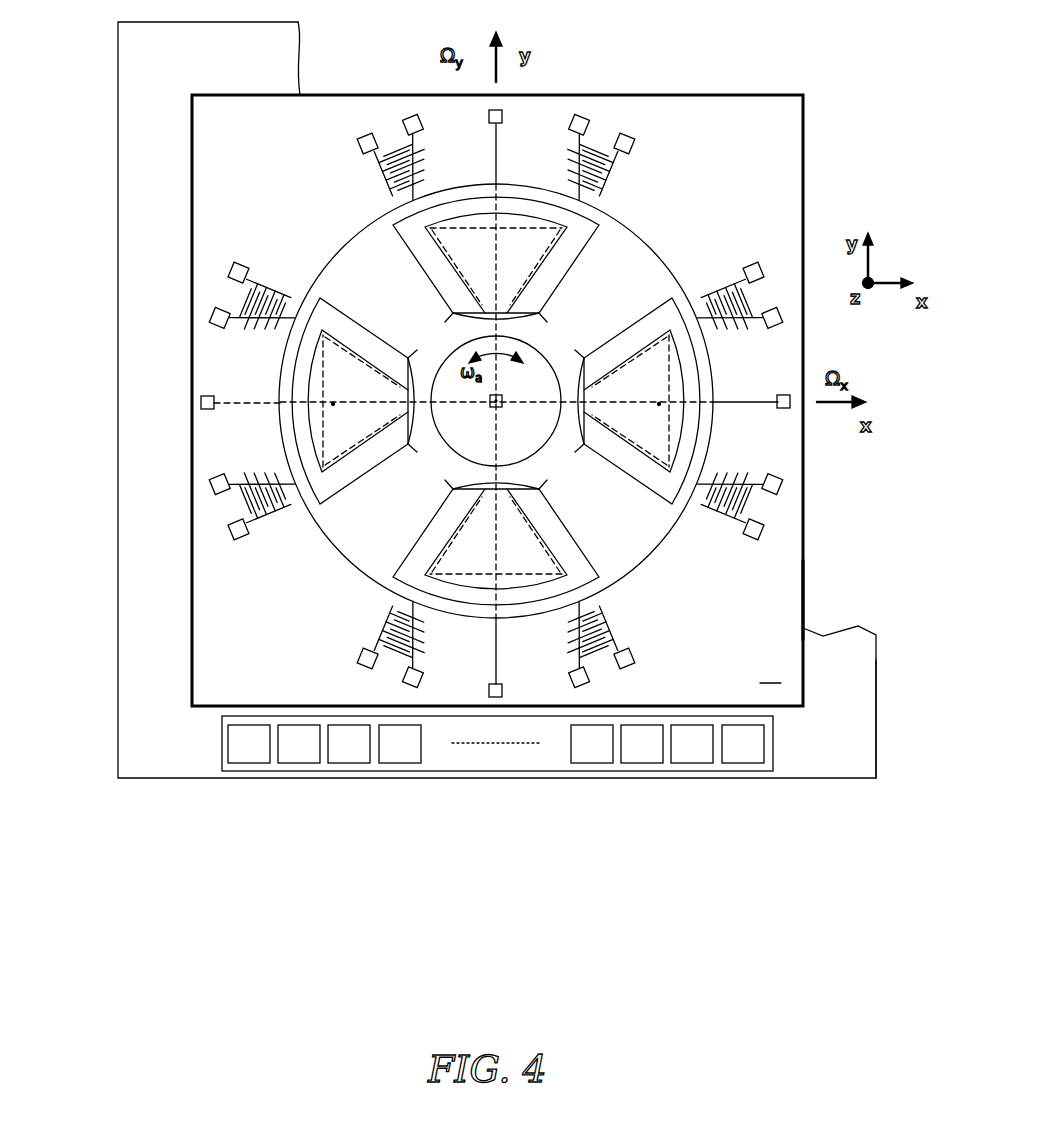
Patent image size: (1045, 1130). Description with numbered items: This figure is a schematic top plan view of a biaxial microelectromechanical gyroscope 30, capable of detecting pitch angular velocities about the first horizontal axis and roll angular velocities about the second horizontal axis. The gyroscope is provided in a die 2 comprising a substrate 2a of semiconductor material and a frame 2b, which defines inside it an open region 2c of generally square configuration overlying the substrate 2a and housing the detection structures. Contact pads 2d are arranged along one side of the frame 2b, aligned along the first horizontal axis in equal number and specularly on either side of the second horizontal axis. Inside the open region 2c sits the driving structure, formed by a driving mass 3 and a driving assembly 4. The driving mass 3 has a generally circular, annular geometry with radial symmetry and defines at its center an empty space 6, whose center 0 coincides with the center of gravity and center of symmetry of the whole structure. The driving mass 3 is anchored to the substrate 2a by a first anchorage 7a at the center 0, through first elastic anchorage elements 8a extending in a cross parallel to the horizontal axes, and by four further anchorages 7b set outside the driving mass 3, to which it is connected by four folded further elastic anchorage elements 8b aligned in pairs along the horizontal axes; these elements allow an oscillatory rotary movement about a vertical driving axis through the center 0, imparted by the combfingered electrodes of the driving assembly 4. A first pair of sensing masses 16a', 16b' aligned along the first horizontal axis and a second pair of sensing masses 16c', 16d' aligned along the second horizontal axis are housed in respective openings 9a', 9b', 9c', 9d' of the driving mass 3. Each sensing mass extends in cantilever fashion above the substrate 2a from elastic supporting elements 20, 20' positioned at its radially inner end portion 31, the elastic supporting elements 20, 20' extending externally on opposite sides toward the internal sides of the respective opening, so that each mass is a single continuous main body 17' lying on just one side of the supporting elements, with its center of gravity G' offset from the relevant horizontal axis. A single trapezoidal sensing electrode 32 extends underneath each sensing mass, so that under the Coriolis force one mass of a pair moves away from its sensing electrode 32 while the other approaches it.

The die 2 is at (118, 507).
The substrate 2a is at (771, 673).
The frame 2b is at (862, 672).
The open region 2c is at (798, 598).
The contact pads 2d is at (249, 765).
The driving mass 3 is at (362, 236).
The driving assembly 4 is at (262, 247).
The empty space 6 is at (534, 432).
The first anchorage 7a is at (489, 406).
The further anchorages 7b is at (503, 117).
The first elastic anchorage elements 8a is at (498, 364).
The further elastic anchorage elements 8b is at (497, 158).
The opening 9a' is at (350, 393).
The opening 9b' is at (642, 392).
The opening 9c' is at (501, 255).
The opening 9d' is at (482, 547).
The sensing mass 16a' is at (358, 425).
The sensing mass 16b' is at (634, 432).
The sensing mass 16c' is at (484, 263).
The sensing mass 16d' is at (532, 539).
The main body 17' is at (496, 401).
The coupling element 20 is at (518, 390).
The elastic supporting elements 20' is at (496, 423).
The microelectromechanical gyroscope 30 is at (855, 106).
The end portion 31 is at (478, 320).
The sensing electrode 32 is at (421, 255).
The origin 0 is at (502, 413).
The center of gravity G' is at (493, 392).